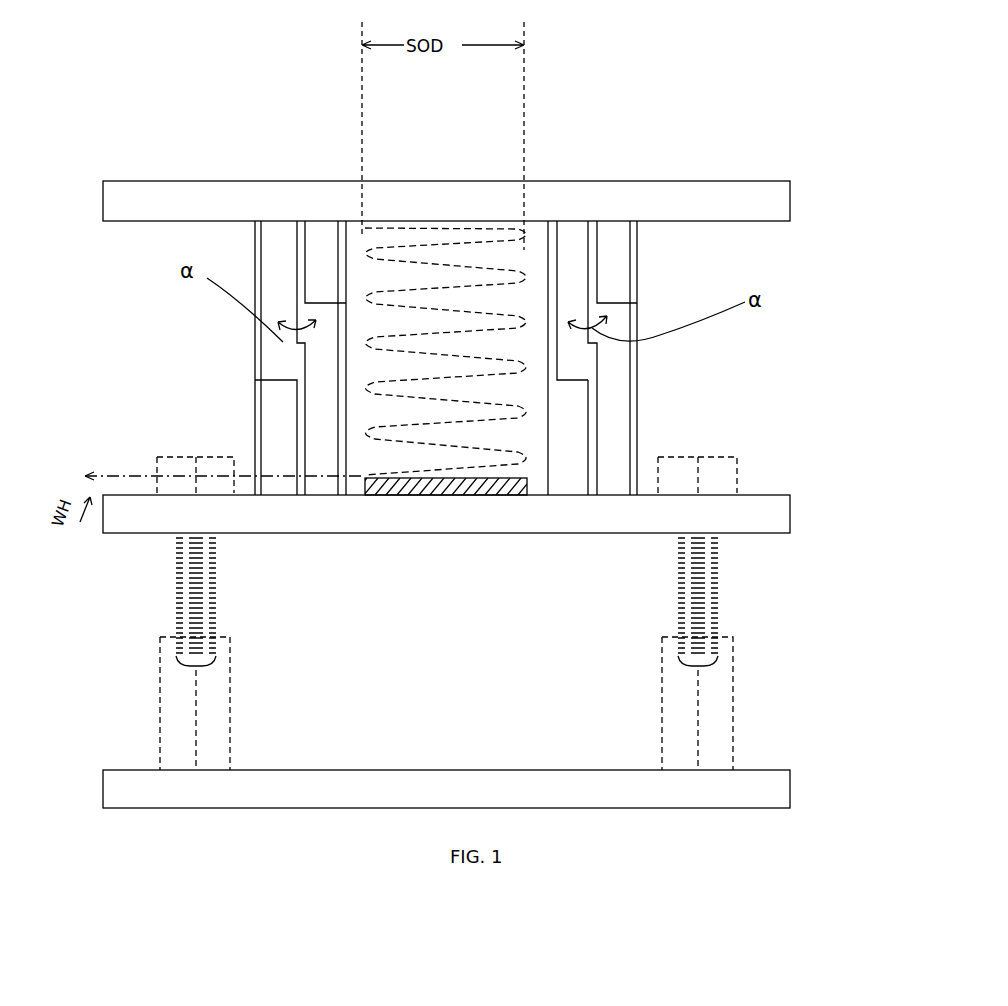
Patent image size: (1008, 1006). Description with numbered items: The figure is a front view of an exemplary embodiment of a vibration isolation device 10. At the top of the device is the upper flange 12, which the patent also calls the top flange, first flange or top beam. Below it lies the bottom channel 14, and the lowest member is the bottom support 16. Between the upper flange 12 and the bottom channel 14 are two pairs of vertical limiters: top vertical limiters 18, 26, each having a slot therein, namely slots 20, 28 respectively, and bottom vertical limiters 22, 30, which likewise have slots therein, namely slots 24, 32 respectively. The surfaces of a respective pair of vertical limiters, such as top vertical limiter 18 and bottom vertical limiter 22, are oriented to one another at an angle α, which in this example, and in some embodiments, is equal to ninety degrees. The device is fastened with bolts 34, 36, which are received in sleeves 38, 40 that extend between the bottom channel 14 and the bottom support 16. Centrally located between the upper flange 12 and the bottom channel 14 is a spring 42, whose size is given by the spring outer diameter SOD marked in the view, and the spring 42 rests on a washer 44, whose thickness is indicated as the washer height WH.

The vibration isolation device 10 is at (806, 324).
The upper flange 12 is at (705, 193).
The bottom channel 14 is at (770, 518).
The bottom support 16 is at (690, 793).
The top vertical limiter 18 is at (607, 243).
The slot 20 is at (590, 243).
The bottom vertical limiter 22 is at (617, 408).
The slot 24 is at (590, 460).
The top vertical limiter 26 is at (272, 235).
The slot 28 is at (298, 232).
The bottom vertical limiter 30 is at (272, 432).
The slot 32 is at (262, 378).
The bolt 34 is at (170, 475).
The bolt 36 is at (728, 470).
The sleeve 38 is at (172, 703).
The sleeve 40 is at (722, 715).
The spring 42 is at (422, 248).
The washer 44 is at (368, 480).